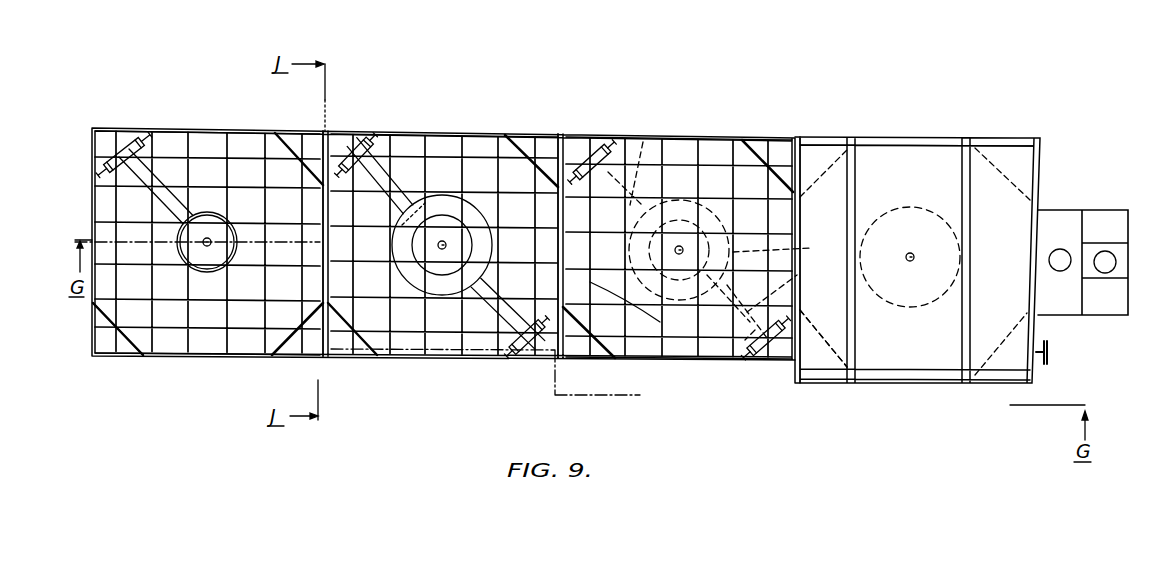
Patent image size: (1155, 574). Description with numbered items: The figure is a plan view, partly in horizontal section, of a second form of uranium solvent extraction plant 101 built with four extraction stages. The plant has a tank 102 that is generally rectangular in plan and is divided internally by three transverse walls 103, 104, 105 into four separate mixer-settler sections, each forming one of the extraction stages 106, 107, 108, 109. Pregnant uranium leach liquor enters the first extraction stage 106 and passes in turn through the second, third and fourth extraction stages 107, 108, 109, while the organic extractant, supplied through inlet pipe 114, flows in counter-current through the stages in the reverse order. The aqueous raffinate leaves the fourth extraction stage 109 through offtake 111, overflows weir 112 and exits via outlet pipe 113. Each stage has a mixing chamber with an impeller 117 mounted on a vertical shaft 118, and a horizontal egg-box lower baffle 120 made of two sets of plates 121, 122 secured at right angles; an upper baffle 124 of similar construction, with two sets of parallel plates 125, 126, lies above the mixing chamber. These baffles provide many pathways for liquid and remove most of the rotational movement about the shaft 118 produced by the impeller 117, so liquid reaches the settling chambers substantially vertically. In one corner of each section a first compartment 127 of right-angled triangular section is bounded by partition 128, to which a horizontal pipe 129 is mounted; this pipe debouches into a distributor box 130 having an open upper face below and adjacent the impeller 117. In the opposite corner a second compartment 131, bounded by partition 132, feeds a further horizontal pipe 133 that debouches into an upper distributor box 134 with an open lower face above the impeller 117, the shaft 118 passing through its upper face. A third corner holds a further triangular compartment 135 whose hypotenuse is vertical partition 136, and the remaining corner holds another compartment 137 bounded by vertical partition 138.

The uranium solvent extraction plant 101 is at (524, 129).
The tank 102 is at (235, 357).
The transverse wall 103 is at (320, 219).
The transverse wall 104 is at (562, 258).
The transverse wall 105 is at (799, 229).
The first extraction stage 106 is at (245, 132).
The second extraction stage 107 is at (480, 135).
The third extraction stage 108 is at (702, 139).
The fourth extraction stage 109 is at (936, 145).
The offtake 111 is at (1060, 249).
The weir 112 is at (1085, 222).
The outlet pipe 113 is at (1105, 273).
The inlet pipe 114 is at (1048, 351).
The impeller 117 is at (425, 278).
The vertical shaft 118 is at (438, 245).
The lower baffle 120 is at (190, 342).
The plates 121 is at (190, 201).
The plates 122 is at (136, 320).
The upper baffle 124 is at (661, 358).
The parallel plates 125 is at (622, 325).
The parallel plates 126 is at (740, 224).
The first compartment 127 is at (115, 142).
The partition 128 is at (135, 136).
The horizontal pipe 129 is at (157, 183).
The distributor box 130 is at (207, 272).
The second compartment 131 is at (295, 357).
The partition 132 is at (278, 352).
The horizontal pipe 133 is at (798, 284).
The upper distributor box 134 is at (798, 251).
The compartment 135 is at (300, 140).
The vertical partition 136 is at (310, 165).
The compartment 137 is at (100, 358).
The vertical partition 138 is at (128, 355).